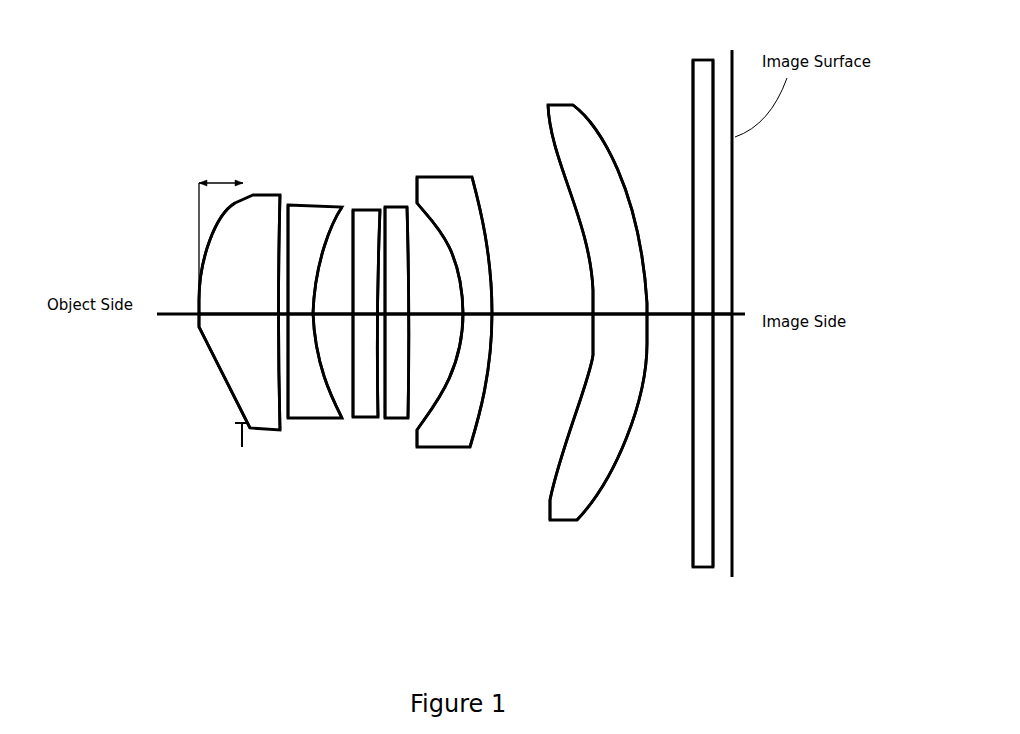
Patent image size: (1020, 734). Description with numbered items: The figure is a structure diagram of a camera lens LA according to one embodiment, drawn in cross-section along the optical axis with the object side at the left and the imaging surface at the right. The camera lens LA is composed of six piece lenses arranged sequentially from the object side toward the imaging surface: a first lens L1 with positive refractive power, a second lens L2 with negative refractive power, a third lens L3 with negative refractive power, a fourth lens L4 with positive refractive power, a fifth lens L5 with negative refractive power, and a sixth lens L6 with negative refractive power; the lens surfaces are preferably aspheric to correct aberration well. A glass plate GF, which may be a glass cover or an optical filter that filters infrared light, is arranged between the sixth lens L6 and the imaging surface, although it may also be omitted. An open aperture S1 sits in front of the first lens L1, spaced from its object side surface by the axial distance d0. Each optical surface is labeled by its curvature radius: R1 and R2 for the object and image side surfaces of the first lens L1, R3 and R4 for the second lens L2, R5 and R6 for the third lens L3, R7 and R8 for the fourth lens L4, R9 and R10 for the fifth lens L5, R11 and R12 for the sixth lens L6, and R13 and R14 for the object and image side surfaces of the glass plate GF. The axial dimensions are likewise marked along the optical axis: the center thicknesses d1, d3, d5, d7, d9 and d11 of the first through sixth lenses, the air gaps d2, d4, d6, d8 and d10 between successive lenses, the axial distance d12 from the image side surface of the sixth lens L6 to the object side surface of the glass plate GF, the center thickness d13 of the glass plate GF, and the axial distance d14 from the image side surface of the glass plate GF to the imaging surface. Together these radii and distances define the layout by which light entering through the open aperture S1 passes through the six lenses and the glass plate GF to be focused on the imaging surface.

The camera lens LA is at (224, 53).
The open aperture S1 is at (243, 195).
The first lens L1 is at (239, 312).
The second lens L2 is at (315, 311).
The third lens L3 is at (361, 310).
The fourth lens L4 is at (397, 311).
The fifth lens L5 is at (454, 312).
The sixth lens L6 is at (597, 312).
The glass plate GF is at (701, 303).
The curvature radius of the first lens object side surface R1 is at (197, 327).
The curvature radius of the first lens image side surface R2 is at (277, 323).
The curvature radius of the second lens object side surface R3 is at (288, 333).
The curvature radius of the second lens image side surface R4 is at (313, 337).
The curvature radius of the third lens object side surface R5 is at (350, 322).
The curvature radius of the third lens image side surface R6 is at (375, 325).
The curvature radius of the fourth lens object side surface R7 is at (385, 335).
The curvature radius of the fourth lens image side surface R8 is at (408, 330).
The curvature radius of the fifth lens object side surface R9 is at (457, 332).
The curvature radius of the fifth lens image side surface R10 is at (486, 343).
The curvature radius of the sixth lens object side surface R11 is at (590, 352).
The curvature radius of the sixth lens image side surface R12 is at (643, 347).
The curvature radius of the glass plate object side surface R13 is at (693, 452).
The curvature radius of the glass plate image side surface R14 is at (712, 458).
The axial distance from open aperture to first lens d0 is at (221, 249).
The center thickness of the first lens d1 is at (239, 305).
The axial distance from first lens to second lens d2 is at (268, 270).
The center thickness of the second lens d3 is at (300, 305).
The axial distance from second lens to third lens d4 is at (333, 305).
The center thickness of the third lens d5 is at (365, 305).
The axial distance from third lens to fourth lens d6 is at (376, 290).
The center thickness of the fourth lens d7 is at (396, 305).
The axial distance from fourth lens to fifth lens d8 is at (435, 305).
The center thickness of the fifth lens d9 is at (477, 305).
The axial distance from fifth lens to sixth lens d10 is at (542, 305).
The center thickness of the sixth lens d11 is at (620, 305).
The axial distance from sixth lens to glass plate d12 is at (670, 305).
The center thickness of glass plate d13 is at (692, 297).
The axial distance from glass plate to imaging surface d14 is at (735, 307).